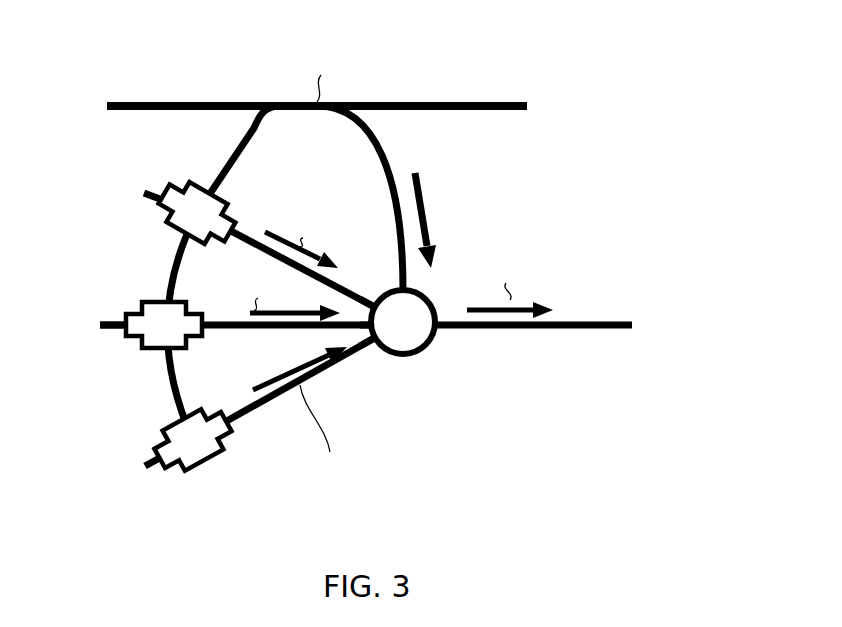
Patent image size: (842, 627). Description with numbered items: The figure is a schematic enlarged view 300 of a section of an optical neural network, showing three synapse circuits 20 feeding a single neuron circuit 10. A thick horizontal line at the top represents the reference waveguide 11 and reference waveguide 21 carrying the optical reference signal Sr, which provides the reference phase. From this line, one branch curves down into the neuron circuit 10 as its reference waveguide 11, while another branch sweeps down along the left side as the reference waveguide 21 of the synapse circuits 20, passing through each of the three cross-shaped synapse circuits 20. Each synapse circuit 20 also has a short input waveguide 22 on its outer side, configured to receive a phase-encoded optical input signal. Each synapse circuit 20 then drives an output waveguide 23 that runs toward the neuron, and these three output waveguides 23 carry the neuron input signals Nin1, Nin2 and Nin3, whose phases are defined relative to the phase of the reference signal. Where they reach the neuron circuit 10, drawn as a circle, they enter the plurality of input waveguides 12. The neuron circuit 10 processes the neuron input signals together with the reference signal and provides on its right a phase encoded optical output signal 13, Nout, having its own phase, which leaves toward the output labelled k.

The neuron circuit 10 is at (425, 286).
The reference waveguide 11 is at (363, 132).
The input waveguides 12 is at (342, 280).
The phase encoded optical output signal 13 is at (598, 310).
The synapse circuit 20 is at (193, 188).
The reference waveguide 21 is at (248, 152).
The input waveguide 22 is at (141, 182).
The output waveguide 23 is at (246, 230).
The enlarged view 300 is at (666, 524).